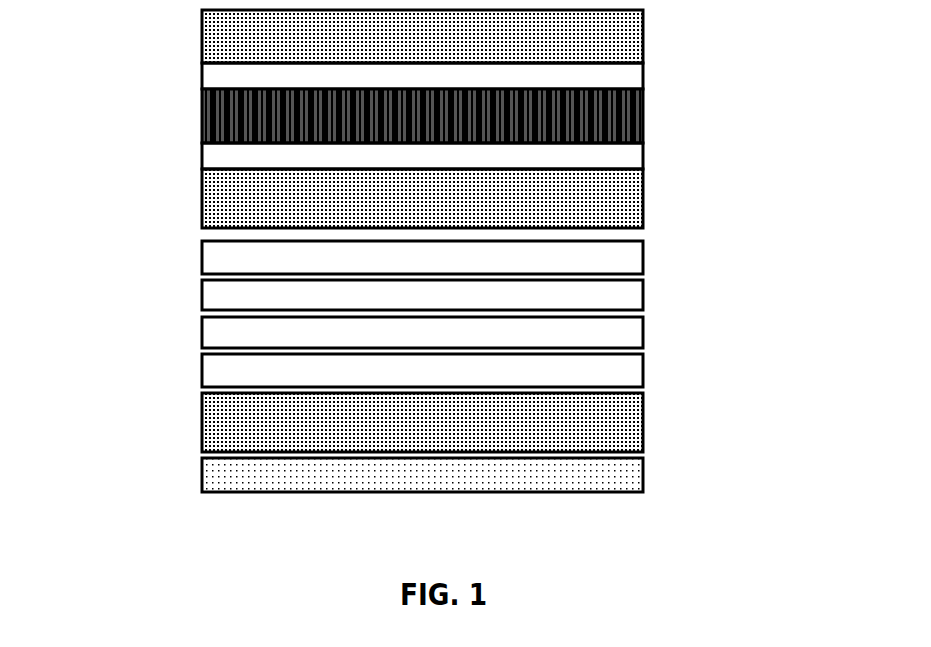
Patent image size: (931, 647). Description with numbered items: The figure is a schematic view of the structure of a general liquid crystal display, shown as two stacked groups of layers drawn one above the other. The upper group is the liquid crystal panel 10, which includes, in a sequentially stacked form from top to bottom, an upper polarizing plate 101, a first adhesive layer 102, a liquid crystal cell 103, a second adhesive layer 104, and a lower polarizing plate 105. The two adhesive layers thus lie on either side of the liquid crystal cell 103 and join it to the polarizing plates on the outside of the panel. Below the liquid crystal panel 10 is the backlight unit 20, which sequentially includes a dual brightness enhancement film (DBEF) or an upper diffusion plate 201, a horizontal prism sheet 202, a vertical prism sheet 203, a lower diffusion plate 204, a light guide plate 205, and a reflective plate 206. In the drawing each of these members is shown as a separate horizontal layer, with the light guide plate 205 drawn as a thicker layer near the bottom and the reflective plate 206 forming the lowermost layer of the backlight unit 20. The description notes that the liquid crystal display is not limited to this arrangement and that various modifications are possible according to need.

The liquid crystal panel 10 is at (193, 35).
The upper polarizing plate 101 is at (643, 27).
The first adhesive layer 102 is at (643, 70).
The liquid crystal cell 103 is at (643, 117).
The second adhesive layer 104 is at (643, 155).
The lower polarizing plate 105 is at (643, 195).
The backlight unit 20 is at (192, 257).
The dual brightness enhancement film or upper diffusion plate 201 is at (643, 255).
The horizontal prism sheet 202 is at (643, 295).
The vertical prism sheet 203 is at (643, 332).
The lower diffusion plate 204 is at (643, 372).
The light guide plate 205 is at (643, 420).
The reflective plate 206 is at (643, 477).